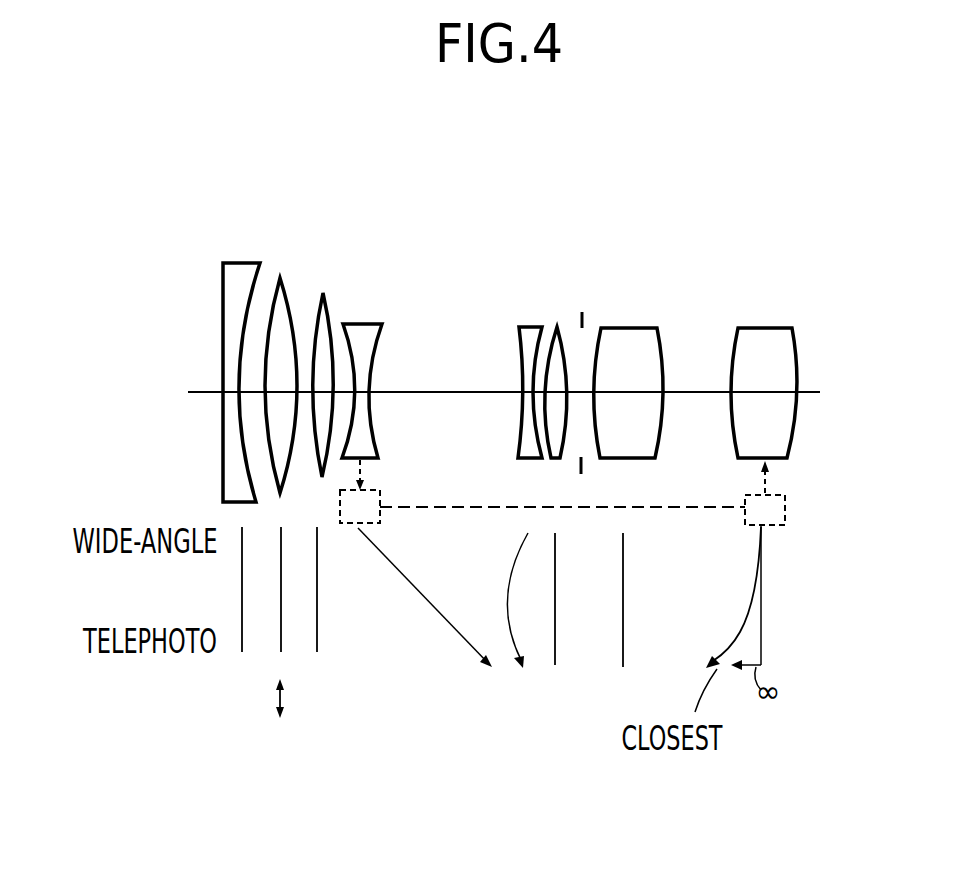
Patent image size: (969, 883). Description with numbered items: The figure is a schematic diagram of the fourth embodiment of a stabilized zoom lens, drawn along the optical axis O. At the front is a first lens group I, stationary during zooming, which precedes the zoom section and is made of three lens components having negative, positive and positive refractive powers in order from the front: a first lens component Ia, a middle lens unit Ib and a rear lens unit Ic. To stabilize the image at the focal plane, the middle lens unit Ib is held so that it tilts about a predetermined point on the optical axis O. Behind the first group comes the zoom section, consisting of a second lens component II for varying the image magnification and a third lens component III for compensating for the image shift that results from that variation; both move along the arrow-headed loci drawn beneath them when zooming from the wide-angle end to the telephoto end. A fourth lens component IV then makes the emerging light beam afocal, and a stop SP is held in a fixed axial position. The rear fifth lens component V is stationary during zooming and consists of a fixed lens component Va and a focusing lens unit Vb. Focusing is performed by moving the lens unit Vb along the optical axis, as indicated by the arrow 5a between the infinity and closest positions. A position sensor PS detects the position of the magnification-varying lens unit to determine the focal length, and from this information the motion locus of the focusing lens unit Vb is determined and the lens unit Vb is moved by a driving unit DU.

The first lens group I is at (215, 212).
The first lens component Ia is at (238, 265).
The middle lens unit Ib is at (281, 278).
The rear lens unit Ic is at (323, 293).
The second lens component II is at (368, 325).
The third lens component III is at (528, 328).
The fourth lens component IV is at (557, 328).
The stop SP is at (583, 314).
The fifth lens component V is at (623, 240).
The fixed lens component Va is at (632, 328).
The focusing lens unit Vb is at (757, 328).
The optical axis O is at (200, 393).
The position sensor PS is at (542, 564).
The driving unit DU is at (758, 565).
The arrow 5a is at (730, 647).